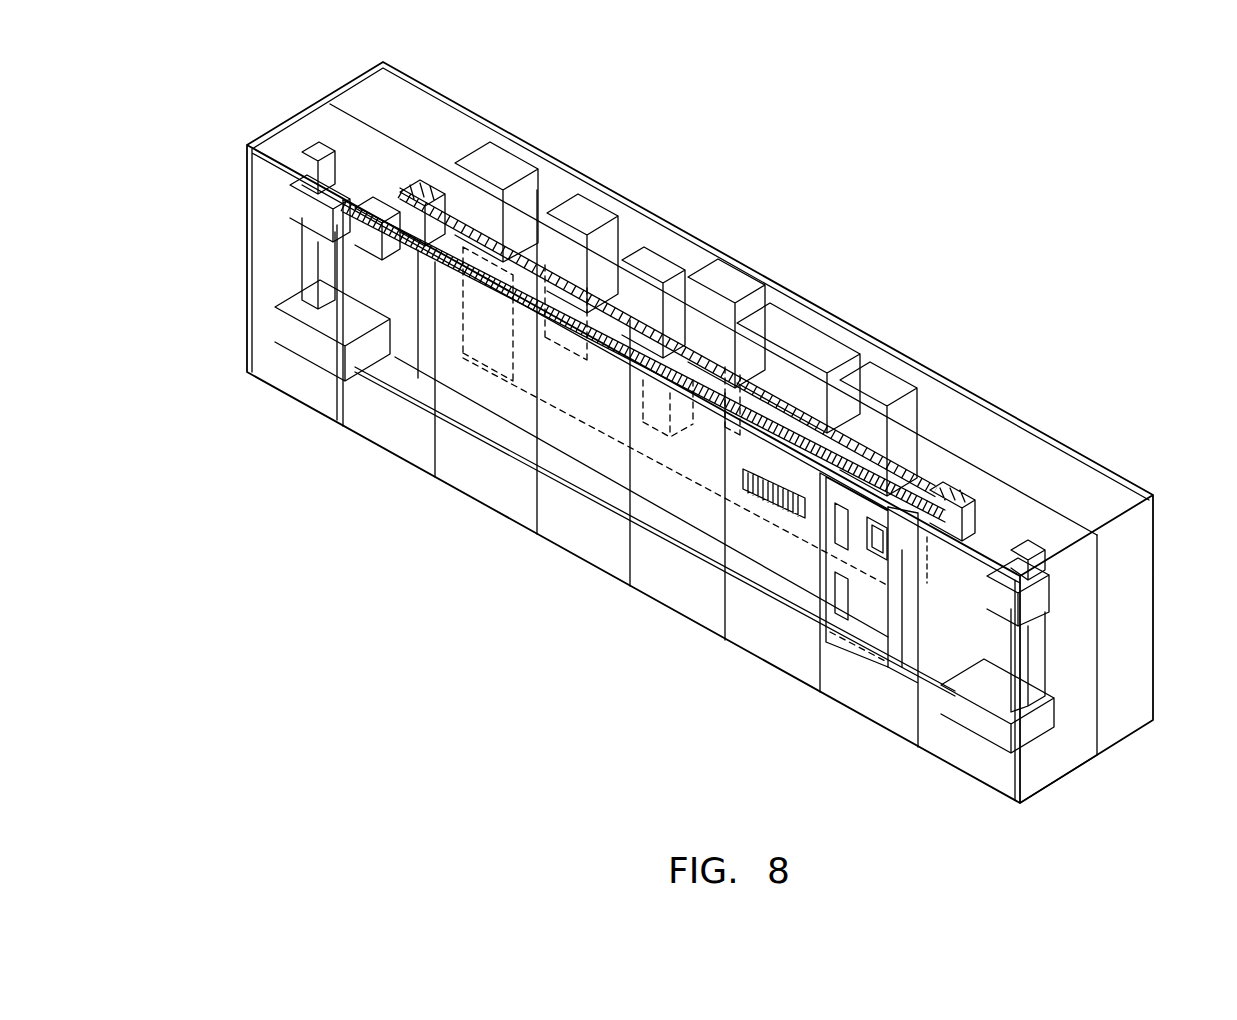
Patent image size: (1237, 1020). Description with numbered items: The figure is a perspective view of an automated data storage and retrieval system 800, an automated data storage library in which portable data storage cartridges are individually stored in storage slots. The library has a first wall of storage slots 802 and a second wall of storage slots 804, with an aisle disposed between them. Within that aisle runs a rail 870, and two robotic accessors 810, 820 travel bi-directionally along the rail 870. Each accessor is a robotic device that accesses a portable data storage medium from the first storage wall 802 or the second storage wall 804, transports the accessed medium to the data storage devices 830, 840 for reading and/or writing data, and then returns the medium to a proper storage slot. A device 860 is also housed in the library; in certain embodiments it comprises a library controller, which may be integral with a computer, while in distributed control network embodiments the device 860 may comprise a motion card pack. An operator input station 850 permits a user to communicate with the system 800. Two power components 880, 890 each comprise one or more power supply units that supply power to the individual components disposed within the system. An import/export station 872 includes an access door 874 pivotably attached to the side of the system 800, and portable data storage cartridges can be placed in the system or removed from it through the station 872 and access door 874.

The automated data storage and retrieval system 800 is at (616, 676).
The first wall of storage slots 802 is at (562, 222).
The second wall of storage slots 804 is at (467, 398).
The accessor 810 is at (296, 205).
The accessor 820 is at (1042, 602).
The data storage device 830 is at (678, 262).
The data storage device 840 is at (727, 284).
The operator input station 850 is at (607, 217).
The library controller 860 is at (490, 152).
The rail 870 is at (572, 488).
The import/export station 872 is at (863, 622).
The access door 874 is at (855, 640).
The power component 880 is at (978, 497).
The power component 890 is at (921, 527).